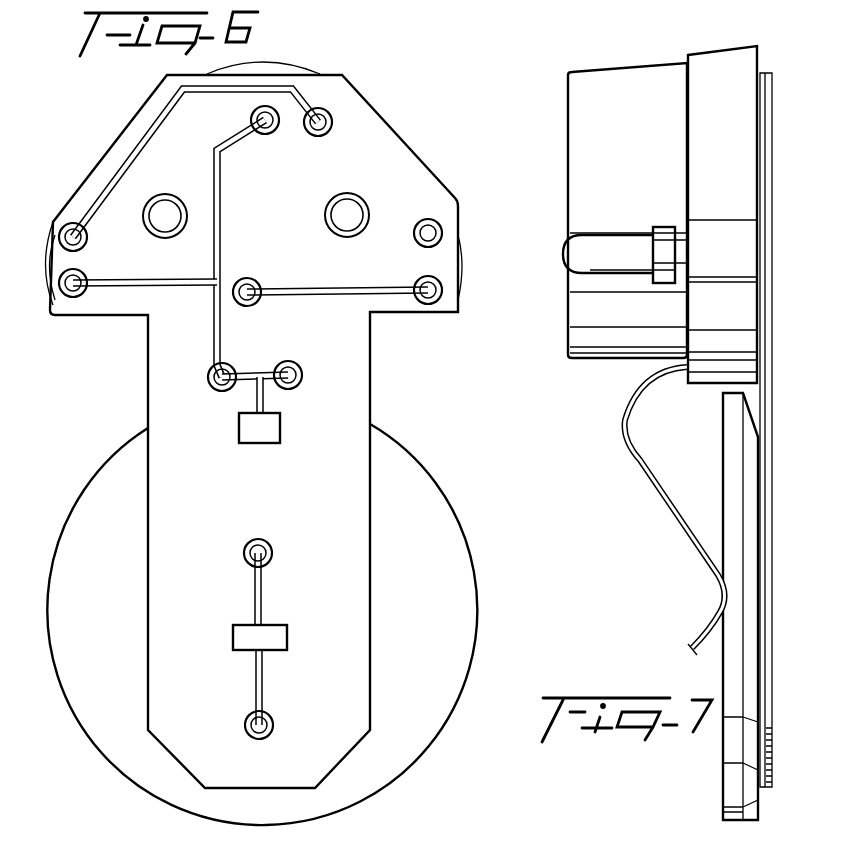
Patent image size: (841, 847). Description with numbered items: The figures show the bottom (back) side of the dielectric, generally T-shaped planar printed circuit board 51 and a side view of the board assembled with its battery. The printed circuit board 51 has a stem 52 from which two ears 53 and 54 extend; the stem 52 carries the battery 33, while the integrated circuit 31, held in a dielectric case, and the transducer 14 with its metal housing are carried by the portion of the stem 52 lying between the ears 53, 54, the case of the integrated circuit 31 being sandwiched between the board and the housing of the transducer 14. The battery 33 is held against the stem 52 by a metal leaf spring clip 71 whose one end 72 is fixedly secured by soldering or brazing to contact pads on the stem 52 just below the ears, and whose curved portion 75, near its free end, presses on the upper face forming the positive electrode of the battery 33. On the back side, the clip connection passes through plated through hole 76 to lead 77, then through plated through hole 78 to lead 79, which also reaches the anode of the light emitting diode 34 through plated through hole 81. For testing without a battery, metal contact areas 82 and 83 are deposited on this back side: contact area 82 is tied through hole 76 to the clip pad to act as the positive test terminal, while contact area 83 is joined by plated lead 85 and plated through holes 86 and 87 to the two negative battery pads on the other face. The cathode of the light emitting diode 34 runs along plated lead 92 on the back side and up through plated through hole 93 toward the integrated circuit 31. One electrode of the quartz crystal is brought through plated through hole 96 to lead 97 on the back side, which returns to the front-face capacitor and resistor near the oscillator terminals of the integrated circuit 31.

In FIG. 7, the transducer 14 is at (567, 155).
In FIG. 7, the integrated circuit 31 is at (763, 180).
In FIG. 6, the battery 33 is at (452, 558).
In FIG. 7, the battery 33 is at (733, 777).
In FIG. 6, the light emitting diode 34 is at (49, 242).
In FIG. 7, the light emitting diode 34 is at (578, 256).
In FIG. 6, the printed circuit board 51 is at (393, 373).
In FIG. 7, the printed circuit board 51 is at (778, 490).
In FIG. 6, the stem 52 is at (170, 462).
In FIG. 6, the ear 53 is at (436, 200).
In FIG. 6, the ear 54 is at (98, 178).
In FIG. 7, the leaf spring clip 71 is at (622, 423).
In FIG. 7, the end of spring clip 72 is at (685, 372).
In FIG. 7, the curved portion 75 is at (716, 605).
In FIG. 6, the plated through hole 76 is at (212, 380).
In FIG. 6, the lead 77 is at (222, 255).
In FIG. 6, the plated through hole 78 is at (265, 135).
In FIG. 6, the lead 79 is at (122, 289).
In FIG. 6, the plated through hole 81 is at (76, 291).
In FIG. 6, the contact area 82 is at (282, 428).
In FIG. 6, the contact area 83 is at (282, 636).
In FIG. 6, the plated lead 85 is at (258, 594).
In FIG. 6, the plated through hole 86 is at (266, 555).
In FIG. 6, the plated through hole 87 is at (268, 730).
In FIG. 6, the plated lead 92 is at (145, 140).
In FIG. 6, the plated through hole 93 is at (328, 113).
In FIG. 6, the plated through hole 96 is at (335, 290).
In FIG. 6, the lead 97 is at (250, 303).